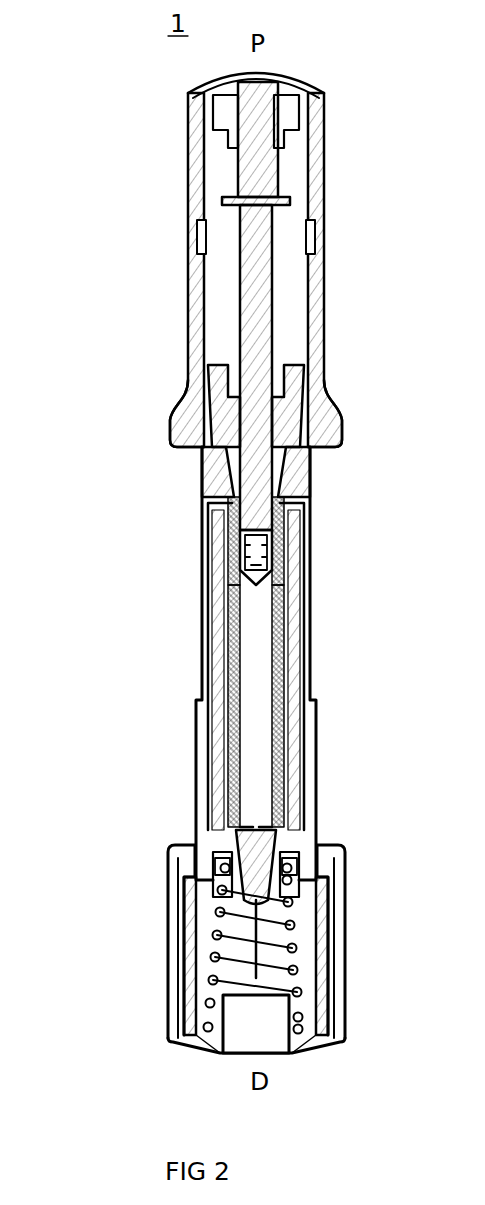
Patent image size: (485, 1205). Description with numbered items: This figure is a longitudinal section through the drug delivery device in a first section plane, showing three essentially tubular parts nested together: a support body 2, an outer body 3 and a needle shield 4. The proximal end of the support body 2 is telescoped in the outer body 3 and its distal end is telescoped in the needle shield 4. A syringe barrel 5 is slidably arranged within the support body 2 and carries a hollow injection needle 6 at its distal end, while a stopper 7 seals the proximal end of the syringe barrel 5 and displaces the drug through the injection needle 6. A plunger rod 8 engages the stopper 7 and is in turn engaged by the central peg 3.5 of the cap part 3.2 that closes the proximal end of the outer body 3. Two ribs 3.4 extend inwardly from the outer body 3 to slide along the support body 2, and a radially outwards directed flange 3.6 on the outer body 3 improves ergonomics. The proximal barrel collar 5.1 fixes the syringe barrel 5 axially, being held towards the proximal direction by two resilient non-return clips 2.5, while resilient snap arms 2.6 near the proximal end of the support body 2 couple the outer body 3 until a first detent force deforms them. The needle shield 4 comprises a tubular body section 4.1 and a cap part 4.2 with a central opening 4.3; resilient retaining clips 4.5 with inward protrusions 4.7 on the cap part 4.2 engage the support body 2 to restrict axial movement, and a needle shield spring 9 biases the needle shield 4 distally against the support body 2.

The support body 2 is at (192, 720).
The resilient non-return clips 2.5 is at (208, 477).
The resilient snap arms 2.6 is at (300, 392).
The outer body 3 is at (186, 240).
The cap part 3.2 is at (322, 96).
The ribs 3.4 is at (215, 278).
The central peg 3.5 is at (240, 158).
The radially outwards directed flange 3.6 is at (336, 437).
The needle shield 4 is at (185, 941).
The body section 4.1 is at (166, 883).
The cap part 4.2 is at (188, 1045).
The central opening 4.3 is at (279, 1018).
The resilient retaining clips 4.5 is at (188, 908).
The inward protrusion 4.7 is at (308, 890).
The syringe barrel 5 is at (248, 635).
The proximal barrel collar 5.1 is at (300, 505).
The hollow injection needle 6 is at (255, 942).
The stopper 7 is at (245, 555).
The plunger rod 8 is at (250, 345).
The needle shield spring 9 is at (294, 947).